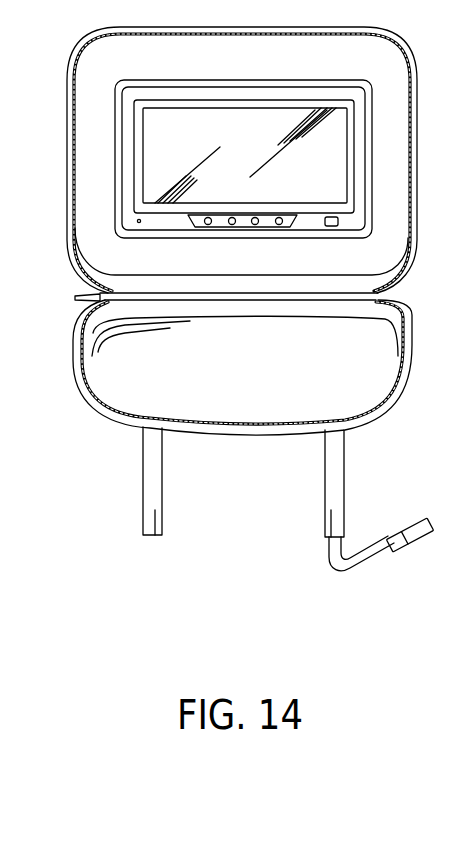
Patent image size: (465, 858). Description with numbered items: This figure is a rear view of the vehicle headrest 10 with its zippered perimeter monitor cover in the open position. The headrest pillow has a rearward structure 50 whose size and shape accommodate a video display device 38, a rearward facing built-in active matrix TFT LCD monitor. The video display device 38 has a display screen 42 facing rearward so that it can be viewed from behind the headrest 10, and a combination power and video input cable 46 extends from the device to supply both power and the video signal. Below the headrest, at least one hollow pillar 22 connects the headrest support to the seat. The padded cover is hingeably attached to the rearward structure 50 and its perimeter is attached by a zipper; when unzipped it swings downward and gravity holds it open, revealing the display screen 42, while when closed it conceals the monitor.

The headrest 10 is at (412, 163).
The hollow pillar 22 is at (330, 526).
The video display device 38 is at (117, 236).
The display screen 42 is at (153, 165).
The combination power and video input cable 46 is at (383, 546).
The rearward structure 50 is at (398, 277).